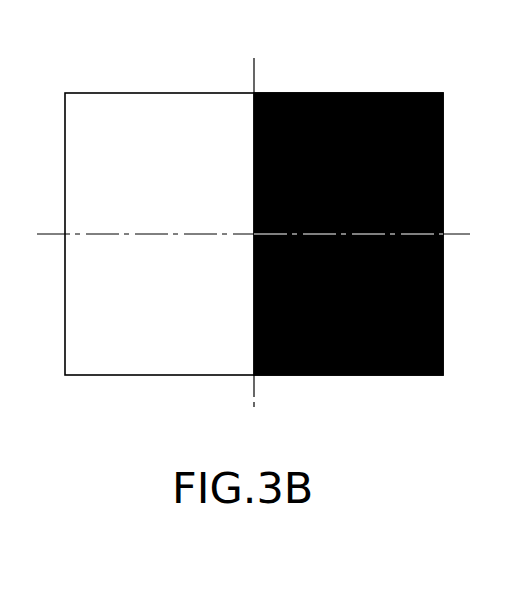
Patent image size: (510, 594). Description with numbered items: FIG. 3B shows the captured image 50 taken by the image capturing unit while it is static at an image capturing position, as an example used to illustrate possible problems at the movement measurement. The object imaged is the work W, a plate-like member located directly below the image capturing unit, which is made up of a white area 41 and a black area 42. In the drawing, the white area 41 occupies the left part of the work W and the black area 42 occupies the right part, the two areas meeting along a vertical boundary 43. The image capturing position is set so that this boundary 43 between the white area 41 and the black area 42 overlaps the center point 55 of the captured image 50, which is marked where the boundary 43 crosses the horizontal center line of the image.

The work W is at (182, 104).
The white area 41 is at (158, 364).
The black area 42 is at (334, 363).
The boundary 43 is at (254, 283).
The captured image 50 is at (331, 93).
The center point 55 is at (254, 233).